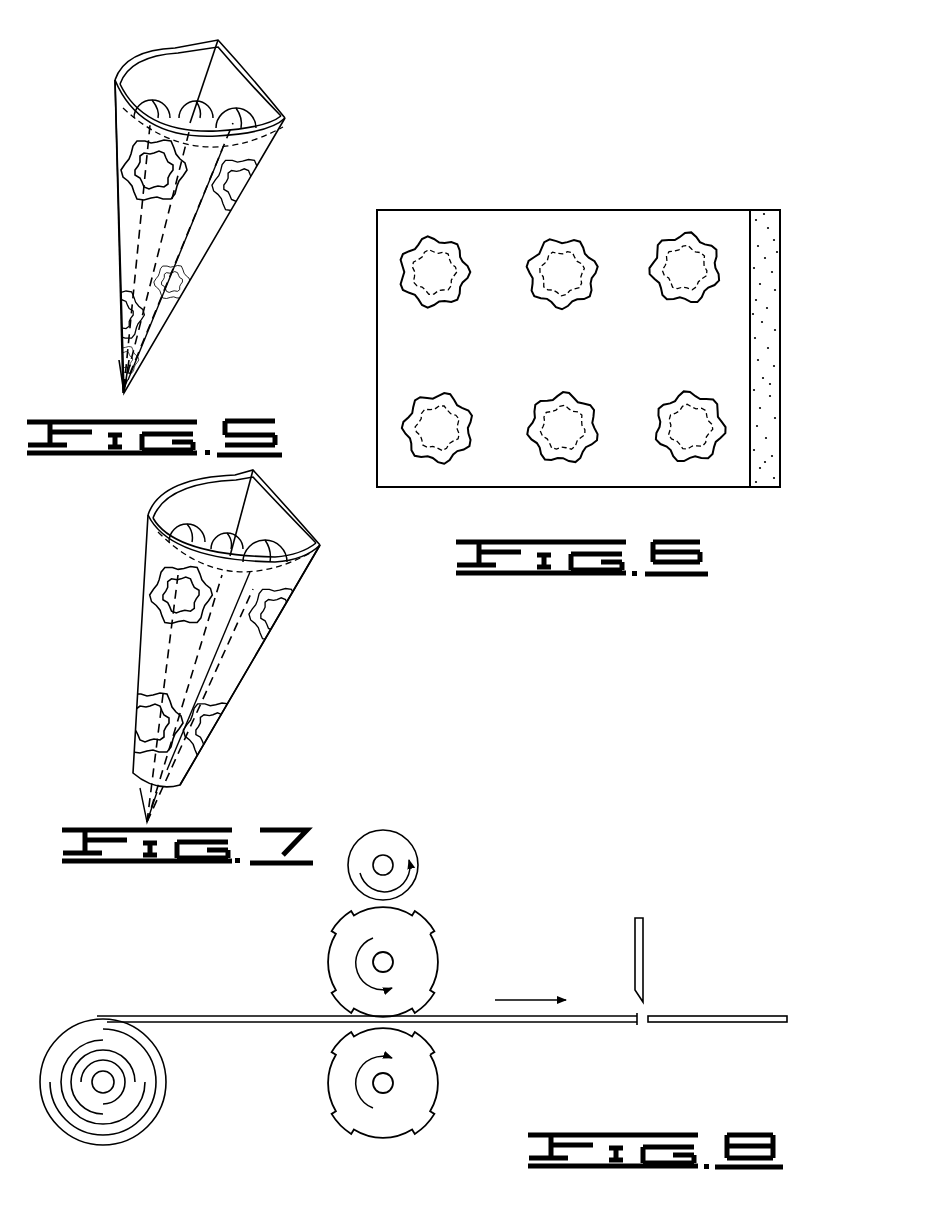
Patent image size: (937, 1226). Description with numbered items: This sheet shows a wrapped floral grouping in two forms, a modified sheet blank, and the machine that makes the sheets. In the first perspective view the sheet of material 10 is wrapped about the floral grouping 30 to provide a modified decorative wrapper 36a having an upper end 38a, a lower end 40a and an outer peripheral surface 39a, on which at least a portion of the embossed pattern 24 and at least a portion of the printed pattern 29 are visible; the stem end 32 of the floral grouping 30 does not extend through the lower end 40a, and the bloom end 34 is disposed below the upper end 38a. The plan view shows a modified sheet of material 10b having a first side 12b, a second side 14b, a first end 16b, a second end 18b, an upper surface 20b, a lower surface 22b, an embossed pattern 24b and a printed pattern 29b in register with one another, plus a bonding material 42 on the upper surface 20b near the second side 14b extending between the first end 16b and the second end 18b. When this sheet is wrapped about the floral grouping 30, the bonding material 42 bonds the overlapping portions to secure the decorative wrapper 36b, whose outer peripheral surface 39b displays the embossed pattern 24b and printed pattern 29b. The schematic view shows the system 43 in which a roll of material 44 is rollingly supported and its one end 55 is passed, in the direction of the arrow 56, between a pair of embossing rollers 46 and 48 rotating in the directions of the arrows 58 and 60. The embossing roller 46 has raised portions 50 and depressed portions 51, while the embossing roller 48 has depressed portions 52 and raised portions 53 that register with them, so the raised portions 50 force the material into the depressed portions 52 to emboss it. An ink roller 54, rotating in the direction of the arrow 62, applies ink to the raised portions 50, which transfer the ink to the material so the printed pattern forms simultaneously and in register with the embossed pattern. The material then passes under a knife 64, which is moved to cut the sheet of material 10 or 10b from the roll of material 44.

In FIG. 5, the sheet of material 10 is at (115, 212).
In FIG. 5, the embossed pattern 24 is at (130, 137).
In FIG. 5, the printed pattern 29 is at (233, 187).
In FIG. 5, the floral grouping 30 is at (222, 70).
In FIG. 7, the floral grouping 30 is at (280, 538).
In FIG. 5, the stem end 32 is at (183, 283).
In FIG. 5, the bloom end 34 is at (158, 97).
In FIG. 5, the decorative wrapper 36a is at (100, 256).
In FIG. 5, the upper end 38a is at (285, 120).
In FIG. 5, the outer peripheral surface 39a is at (117, 280).
In FIG. 5, the lower end 40a is at (128, 380).
In FIG. 6, the sheet of material 10b is at (452, 200).
In FIG. 7, the sheet of material 10b is at (145, 532).
In FIG. 6, the first side 12b is at (377, 320).
In FIG. 6, the second side 14b is at (780, 272).
In FIG. 6, the first end 16b is at (568, 210).
In FIG. 6, the second end 18b is at (506, 487).
In FIG. 6, the upper surface 20b is at (633, 454).
In FIG. 6, the embossed pattern 24b is at (691, 238).
In FIG. 7, the embossed pattern 24b is at (280, 610).
In FIG. 6, the printed pattern 29b is at (712, 443).
In FIG. 7, the printed pattern 29b is at (163, 585).
In FIG. 6, the bonding material 42 is at (760, 330).
In FIG. 7, the lower surface 22b is at (247, 660).
In FIG. 7, the decorative wrapper 36b is at (123, 630).
In FIG. 7, the outer peripheral surface 39b is at (247, 687).
In FIG. 8, the system 43 is at (563, 868).
In FIG. 8, the roll of material 44 is at (140, 1137).
In FIG. 8, the embossing roller 46 is at (438, 937).
In FIG. 8, the embossing roller 48 is at (452, 1073).
In FIG. 8, the raised portions 50 is at (342, 922).
In FIG. 8, the depressed portions 51 is at (330, 978).
In FIG. 8, the depressed portions 52 is at (343, 1120).
In FIG. 8, the raised portions 53 is at (393, 1145).
In FIG. 8, the ink roller 54 is at (403, 823).
In FIG. 8, the end 55 is at (637, 1017).
In FIG. 8, the arrow 56 is at (517, 1000).
In FIG. 8, the arrow 58 is at (363, 957).
In FIG. 8, the arrow 60 is at (363, 1083).
In FIG. 8, the arrow 62 is at (407, 878).
In FIG. 8, the knife 64 is at (643, 943).
In FIG. 8, the sheet of material 10 or 10b is at (690, 1013).